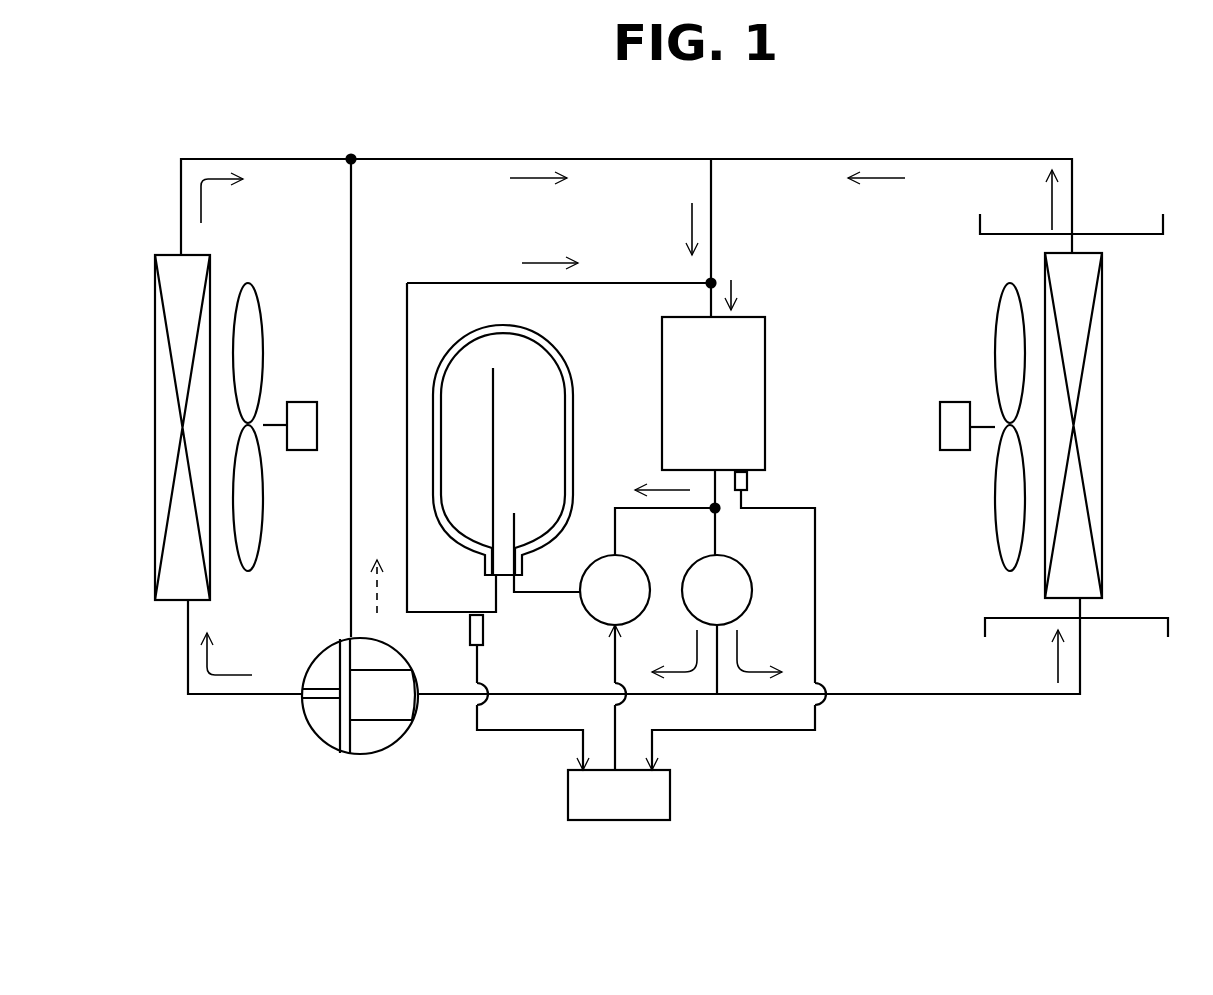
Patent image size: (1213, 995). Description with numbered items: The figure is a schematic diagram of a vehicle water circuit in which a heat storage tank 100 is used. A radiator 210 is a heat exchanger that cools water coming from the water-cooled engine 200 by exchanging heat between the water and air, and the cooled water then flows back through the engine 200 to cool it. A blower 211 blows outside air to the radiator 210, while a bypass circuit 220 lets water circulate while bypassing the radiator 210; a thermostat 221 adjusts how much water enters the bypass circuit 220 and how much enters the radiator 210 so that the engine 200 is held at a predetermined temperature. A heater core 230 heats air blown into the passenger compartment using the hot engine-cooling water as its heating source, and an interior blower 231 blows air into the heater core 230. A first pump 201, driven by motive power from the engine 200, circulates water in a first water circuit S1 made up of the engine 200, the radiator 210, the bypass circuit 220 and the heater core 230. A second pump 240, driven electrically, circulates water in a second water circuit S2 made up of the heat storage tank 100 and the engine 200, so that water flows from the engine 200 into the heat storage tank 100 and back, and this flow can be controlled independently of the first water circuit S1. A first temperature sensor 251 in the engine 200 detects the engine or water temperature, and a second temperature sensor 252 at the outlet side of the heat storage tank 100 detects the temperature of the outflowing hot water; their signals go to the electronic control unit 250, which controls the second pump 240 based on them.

The heat storage tank 100 is at (578, 330).
The water-cooled engine 200 is at (766, 385).
The first pump 201 is at (752, 575).
The radiator 210 is at (166, 255).
The blower 211 is at (300, 400).
The bypass circuit 220 is at (353, 228).
The thermostat 221 is at (402, 737).
The heater core 230 is at (1104, 452).
The blower 231 is at (951, 400).
The second pump 240 is at (656, 556).
The electronic control unit 250 is at (671, 795).
The first temperature sensor 251 is at (748, 479).
The second temperature sensor 252 is at (484, 629).
The first water circuit S1 is at (610, 159).
The second water circuit S2 is at (604, 283).